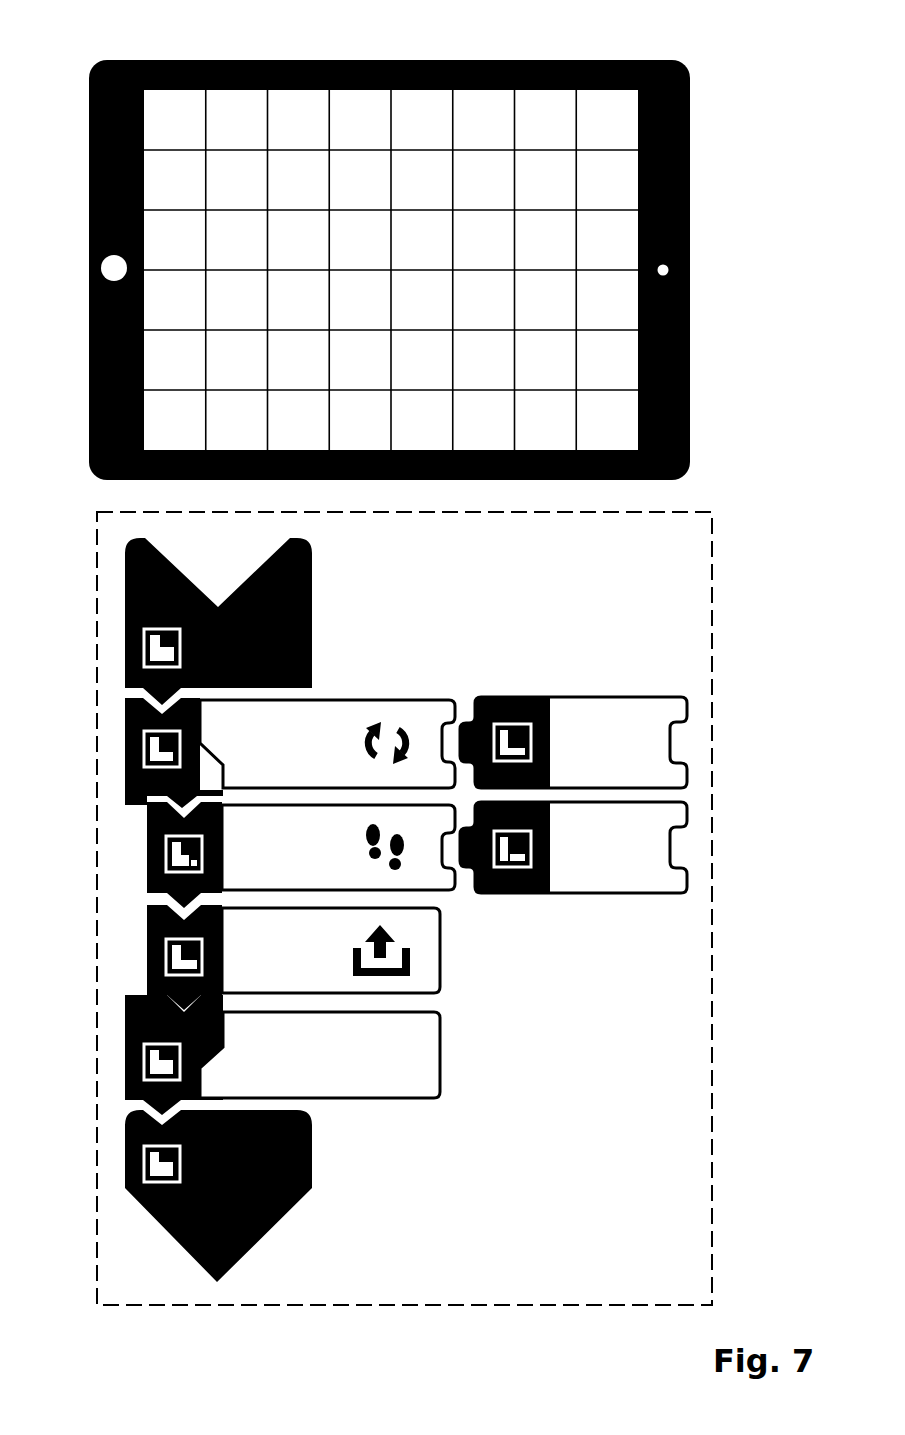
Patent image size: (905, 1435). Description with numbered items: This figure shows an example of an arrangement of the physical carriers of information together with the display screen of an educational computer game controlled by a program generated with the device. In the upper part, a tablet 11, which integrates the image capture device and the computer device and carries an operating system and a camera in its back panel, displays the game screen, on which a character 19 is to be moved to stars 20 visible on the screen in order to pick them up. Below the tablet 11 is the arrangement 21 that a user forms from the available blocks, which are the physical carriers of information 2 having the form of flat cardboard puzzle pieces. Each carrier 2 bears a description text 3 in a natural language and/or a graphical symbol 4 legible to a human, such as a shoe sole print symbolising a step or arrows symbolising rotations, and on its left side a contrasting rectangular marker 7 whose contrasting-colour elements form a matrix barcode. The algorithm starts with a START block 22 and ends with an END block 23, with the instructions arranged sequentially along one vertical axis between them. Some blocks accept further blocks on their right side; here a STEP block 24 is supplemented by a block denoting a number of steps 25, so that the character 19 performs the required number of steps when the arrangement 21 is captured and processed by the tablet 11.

The physical carrier of information 2 is at (312, 597).
The description text 3 is at (280, 642).
The graphical symbol 4 is at (387, 717).
The contrasting rectangular marker 7 is at (143, 650).
The tablet 11 is at (525, 62).
The character 19 is at (612, 222).
The stars 20 is at (235, 222).
The arrangement 21 is at (712, 583).
The START block 22 is at (165, 558).
The END block 23 is at (312, 1145).
The STEP block 24 is at (413, 863).
The block denoting a number of steps 25 is at (565, 870).